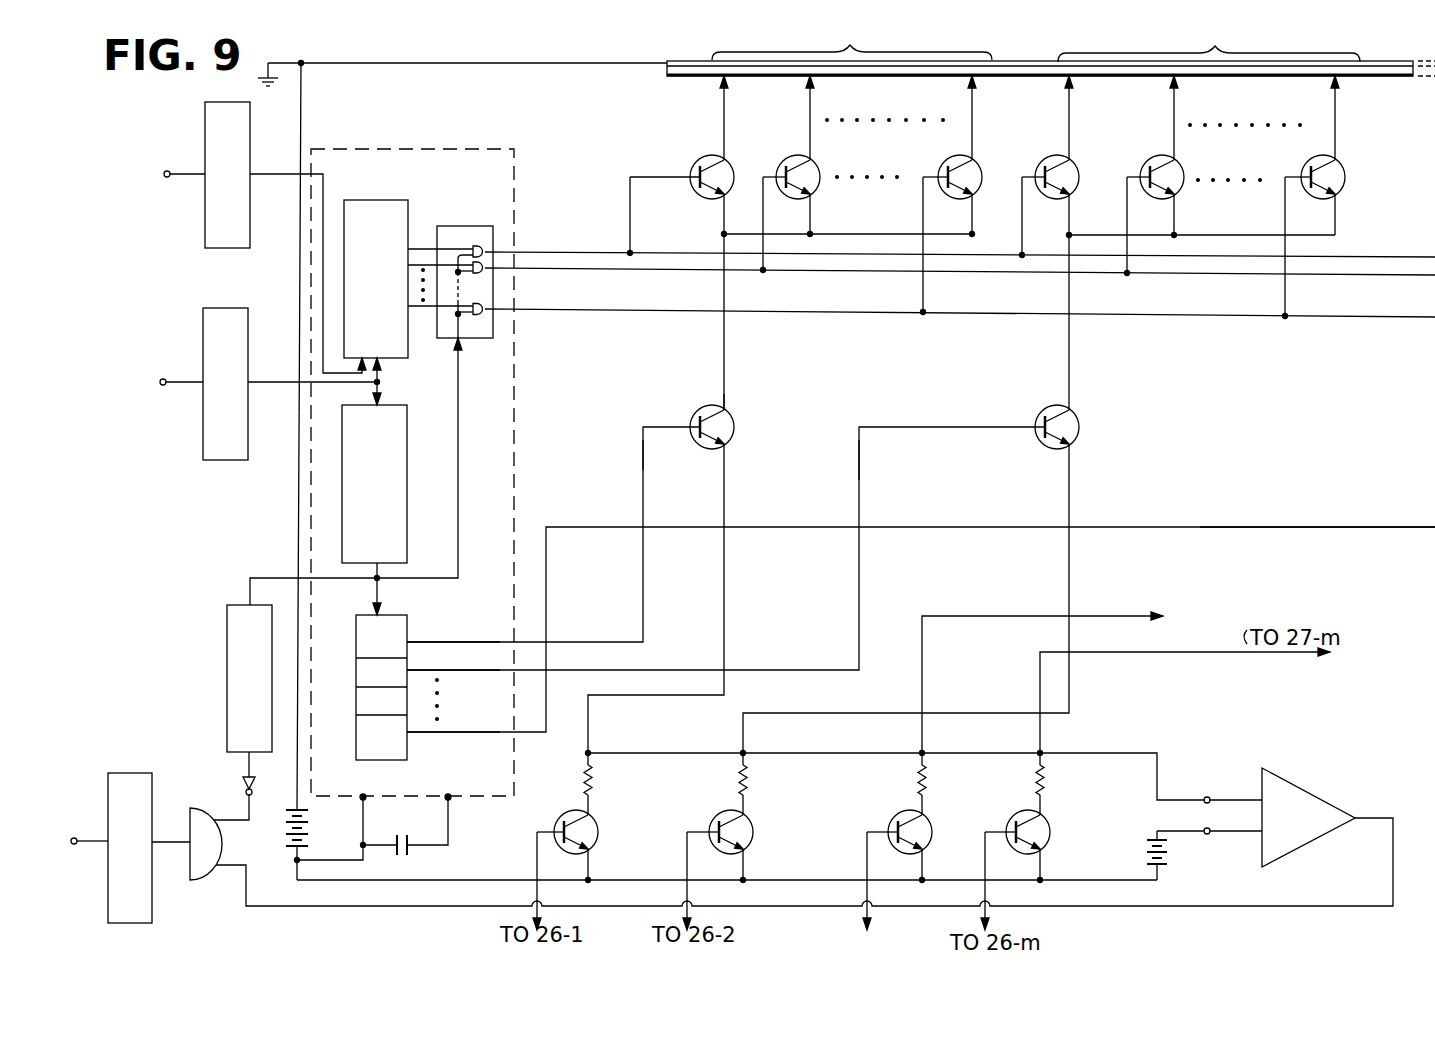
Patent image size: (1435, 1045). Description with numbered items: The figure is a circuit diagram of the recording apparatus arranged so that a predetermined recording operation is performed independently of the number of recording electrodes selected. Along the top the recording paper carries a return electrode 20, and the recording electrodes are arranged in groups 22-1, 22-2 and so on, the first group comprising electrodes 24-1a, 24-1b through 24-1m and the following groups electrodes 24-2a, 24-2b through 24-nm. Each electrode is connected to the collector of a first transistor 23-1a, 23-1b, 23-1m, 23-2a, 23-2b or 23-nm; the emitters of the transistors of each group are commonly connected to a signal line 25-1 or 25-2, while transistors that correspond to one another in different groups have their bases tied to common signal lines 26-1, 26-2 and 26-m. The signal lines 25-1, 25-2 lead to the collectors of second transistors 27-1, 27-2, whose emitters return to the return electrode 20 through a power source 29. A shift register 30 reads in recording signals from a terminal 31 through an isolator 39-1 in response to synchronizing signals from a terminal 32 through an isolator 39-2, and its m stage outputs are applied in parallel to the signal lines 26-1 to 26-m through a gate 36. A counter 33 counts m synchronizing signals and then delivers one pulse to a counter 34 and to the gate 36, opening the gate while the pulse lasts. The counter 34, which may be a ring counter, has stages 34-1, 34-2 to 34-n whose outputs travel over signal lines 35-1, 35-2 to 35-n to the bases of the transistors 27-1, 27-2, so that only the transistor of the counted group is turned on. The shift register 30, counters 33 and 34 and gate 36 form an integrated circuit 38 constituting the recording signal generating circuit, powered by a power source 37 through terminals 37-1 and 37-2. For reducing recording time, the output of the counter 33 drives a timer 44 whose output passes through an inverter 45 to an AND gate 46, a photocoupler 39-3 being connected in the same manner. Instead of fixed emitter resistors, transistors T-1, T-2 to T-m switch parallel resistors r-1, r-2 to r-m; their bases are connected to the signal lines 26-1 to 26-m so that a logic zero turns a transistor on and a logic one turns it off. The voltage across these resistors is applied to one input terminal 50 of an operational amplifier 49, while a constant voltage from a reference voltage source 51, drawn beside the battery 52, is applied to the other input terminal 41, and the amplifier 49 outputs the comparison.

The return electrode 20 is at (1014, 61).
The first group of recording electrodes 22-1 is at (852, 42).
The second group of recording electrodes 22-2 is at (1209, 45).
The first transistor 23-1a is at (734, 160).
The first transistor 23-1b is at (820, 160).
The first transistor 23-1m is at (984, 160).
The first transistor 23-2a is at (1076, 160).
The first transistor 23-2b is at (1182, 160).
The first transistor 23-nm is at (1344, 160).
The recording electrode 24-1a is at (726, 98).
The recording electrode 24-1b is at (812, 98).
The recording electrode 24-1m is at (974, 98).
The recording electrode 24-2a is at (1071, 98).
The recording electrode 24-2b is at (1176, 98).
The recording electrode 24-nm is at (1337, 98).
The signal line 25-1 is at (725, 348).
The signal line 25-2 is at (1071, 350).
The common signal line 26-1 is at (1360, 256).
The common signal line 26-2 is at (1384, 275).
The common signal line 26-m is at (1325, 318).
The second transistor 27-1 is at (735, 412).
The second transistor 27-2 is at (1080, 412).
The power source 29 is at (310, 823).
The shift register 30 is at (365, 200).
The terminal 31 is at (167, 178).
The terminal 32 is at (162, 378).
The counter 33 is at (407, 418).
The counter 34 is at (351, 696).
The counter stage 34-1 is at (407, 637).
The counter stage 34-2 is at (407, 665).
The counter stage 34-n is at (407, 742).
The signal line 35-1 is at (643, 452).
The signal line 35-2 is at (859, 462).
The signal line 35-n is at (1322, 527).
The gate 36 is at (463, 226).
The power source 37 is at (405, 832).
The terminal 37-1 is at (450, 800).
The terminal 37-2 is at (365, 796).
The integrated circuit 38 is at (340, 149).
The isolator 39-1 is at (205, 139).
The isolator 39-2 is at (203, 318).
The photocoupler 39-3 is at (130, 773).
The input terminal 41 is at (73, 837).
The timer 44 is at (227, 692).
The inverter 45 is at (242, 783).
The AND gate 46 is at (200, 877).
The operational amplifier 49 is at (1290, 784).
The input terminal 50 is at (1205, 797).
The reference voltage source 51 is at (1207, 835).
The reference battery 52 is at (1146, 855).
The resistor r-1 is at (592, 778).
The resistor r-2 is at (747, 778).
The resistor r-m is at (1044, 780).
The transistor T-1 is at (592, 817).
The transistor T-2 is at (752, 817).
The transistor T-m is at (1044, 823).